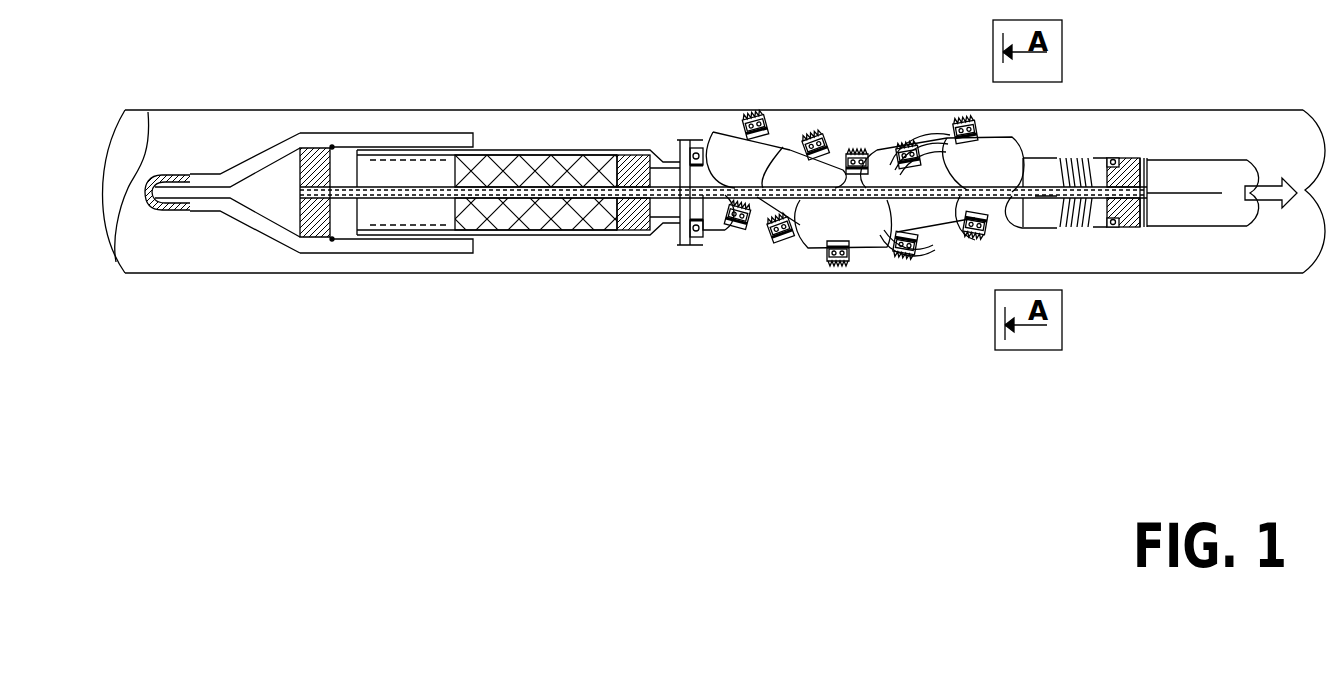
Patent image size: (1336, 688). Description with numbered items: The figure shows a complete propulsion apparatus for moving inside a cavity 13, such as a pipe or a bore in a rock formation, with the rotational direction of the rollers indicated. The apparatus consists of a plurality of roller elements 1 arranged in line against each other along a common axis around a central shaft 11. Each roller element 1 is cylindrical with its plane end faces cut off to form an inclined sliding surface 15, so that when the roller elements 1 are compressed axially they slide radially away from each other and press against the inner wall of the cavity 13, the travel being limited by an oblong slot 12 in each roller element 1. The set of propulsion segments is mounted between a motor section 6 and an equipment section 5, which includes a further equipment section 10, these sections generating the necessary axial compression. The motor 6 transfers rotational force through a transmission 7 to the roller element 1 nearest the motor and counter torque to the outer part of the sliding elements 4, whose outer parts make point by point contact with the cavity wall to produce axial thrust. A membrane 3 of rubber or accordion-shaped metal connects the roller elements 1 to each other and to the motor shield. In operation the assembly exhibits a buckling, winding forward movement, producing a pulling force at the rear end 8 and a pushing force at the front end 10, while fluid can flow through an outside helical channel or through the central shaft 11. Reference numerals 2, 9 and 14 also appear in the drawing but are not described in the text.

The roller element 1 is at (1013, 133).
The cutting tool 2 is at (767, 121).
The membrane 3 is at (928, 128).
The sliding element 4 is at (857, 143).
The equipment section 5 is at (1079, 157).
The motor 6 is at (553, 147).
The transmission 7 is at (690, 140).
The rear end 8 is at (386, 131).
The nose piece 9 is at (172, 175).
The front end 10 is at (1188, 157).
The central shaft 11 is at (1063, 208).
The oblong slot 12 is at (901, 254).
The cavity 13 is at (715, 275).
The cutting tool 14 is at (752, 234).
The inclined sliding surface 15 is at (1012, 219).